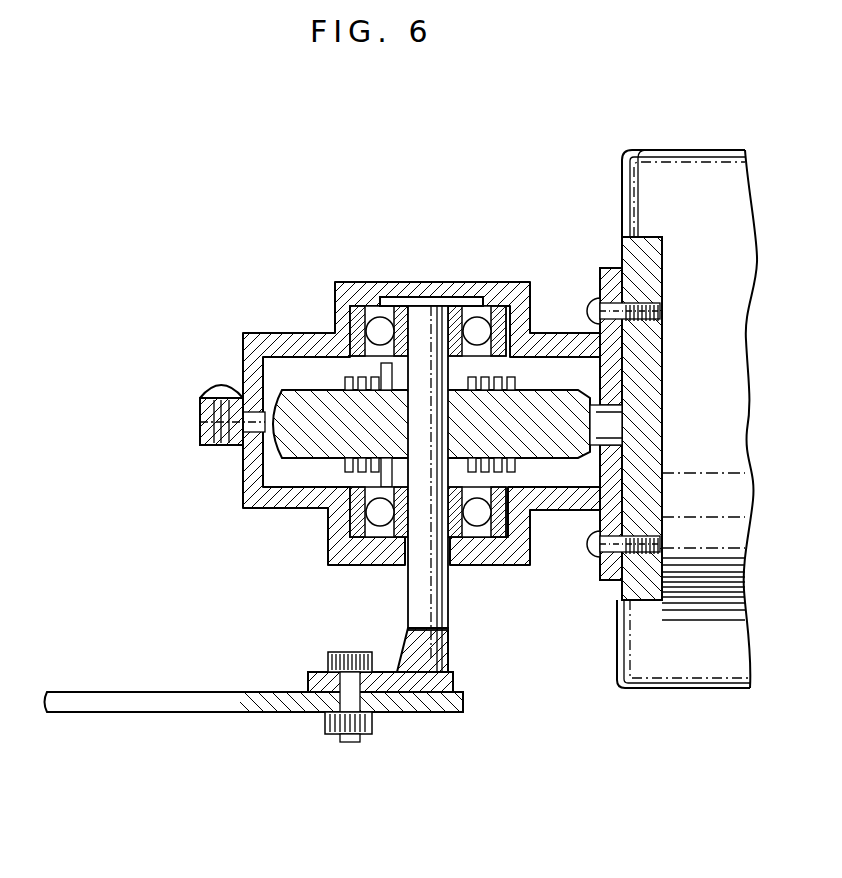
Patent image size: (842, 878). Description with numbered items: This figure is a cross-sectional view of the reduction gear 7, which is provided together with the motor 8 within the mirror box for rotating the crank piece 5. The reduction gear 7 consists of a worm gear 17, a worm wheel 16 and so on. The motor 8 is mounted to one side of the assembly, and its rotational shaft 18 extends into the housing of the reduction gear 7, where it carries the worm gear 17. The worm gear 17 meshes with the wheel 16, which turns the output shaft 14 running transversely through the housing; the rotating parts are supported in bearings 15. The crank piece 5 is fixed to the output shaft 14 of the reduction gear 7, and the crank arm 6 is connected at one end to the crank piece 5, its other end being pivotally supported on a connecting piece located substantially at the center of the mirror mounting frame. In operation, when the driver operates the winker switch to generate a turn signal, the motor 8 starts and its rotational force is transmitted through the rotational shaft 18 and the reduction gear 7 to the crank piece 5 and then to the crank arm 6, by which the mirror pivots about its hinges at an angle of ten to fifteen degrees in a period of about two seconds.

The crank piece 5 is at (384, 670).
The crank arm 6 is at (107, 703).
The reduction gear 7 is at (344, 276).
The motor 8 is at (666, 165).
The output shaft 14 is at (432, 298).
The bearing 15 is at (360, 312).
The wheel 16 is at (310, 443).
The worm gear 17 is at (352, 378).
The rotational shaft of the motor 18 is at (606, 412).